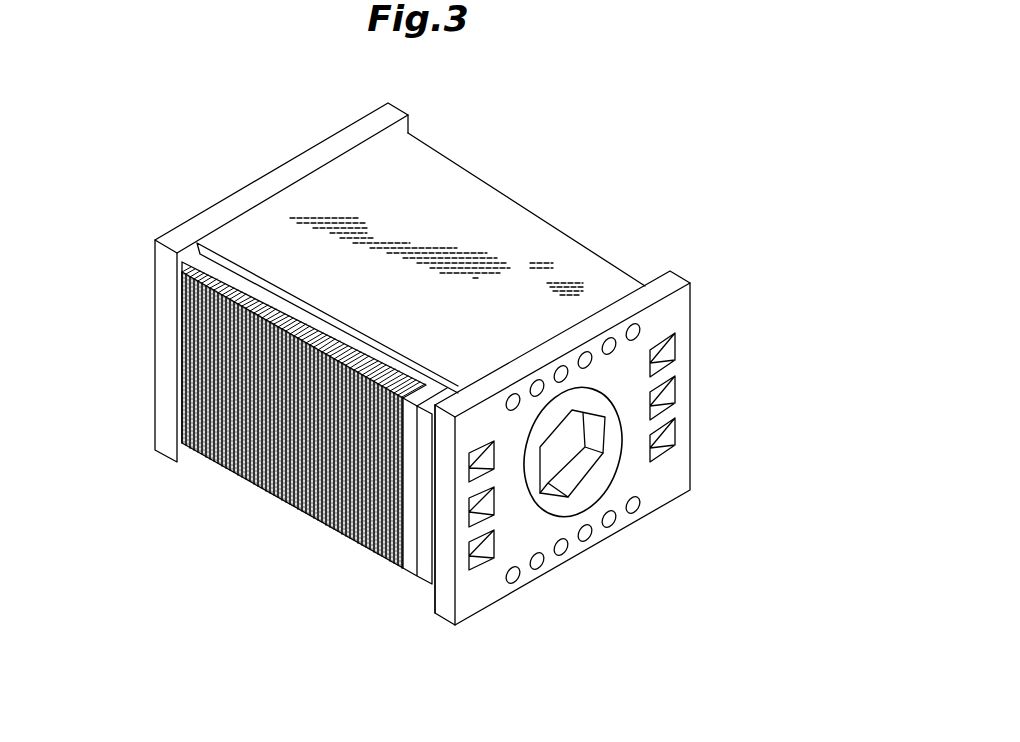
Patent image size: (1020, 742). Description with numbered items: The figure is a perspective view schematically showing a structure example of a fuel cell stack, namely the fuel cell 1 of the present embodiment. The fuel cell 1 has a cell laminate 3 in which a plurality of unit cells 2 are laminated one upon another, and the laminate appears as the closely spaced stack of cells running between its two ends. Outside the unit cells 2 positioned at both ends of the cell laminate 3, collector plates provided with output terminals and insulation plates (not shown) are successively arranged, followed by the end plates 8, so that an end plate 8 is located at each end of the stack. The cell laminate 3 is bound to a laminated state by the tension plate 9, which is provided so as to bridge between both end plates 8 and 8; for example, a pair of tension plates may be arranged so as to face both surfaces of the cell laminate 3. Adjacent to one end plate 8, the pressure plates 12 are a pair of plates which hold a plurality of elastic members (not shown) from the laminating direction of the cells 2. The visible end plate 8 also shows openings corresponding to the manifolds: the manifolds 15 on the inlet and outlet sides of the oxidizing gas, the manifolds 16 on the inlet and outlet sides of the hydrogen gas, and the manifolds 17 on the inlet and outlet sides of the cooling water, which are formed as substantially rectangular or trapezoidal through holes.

The fuel cell 1 is at (158, 208).
The unit cells 2 is at (337, 513).
The cell laminate 3 is at (250, 488).
The end plates 8 is at (396, 108).
The tension plate 9 is at (487, 222).
The pressure plate 12 is at (398, 572).
The manifolds for the oxidizing gas 15 is at (487, 450).
The manifolds for the hydrogen gas 16 is at (664, 345).
The manifolds for the cooling water 17 is at (664, 392).